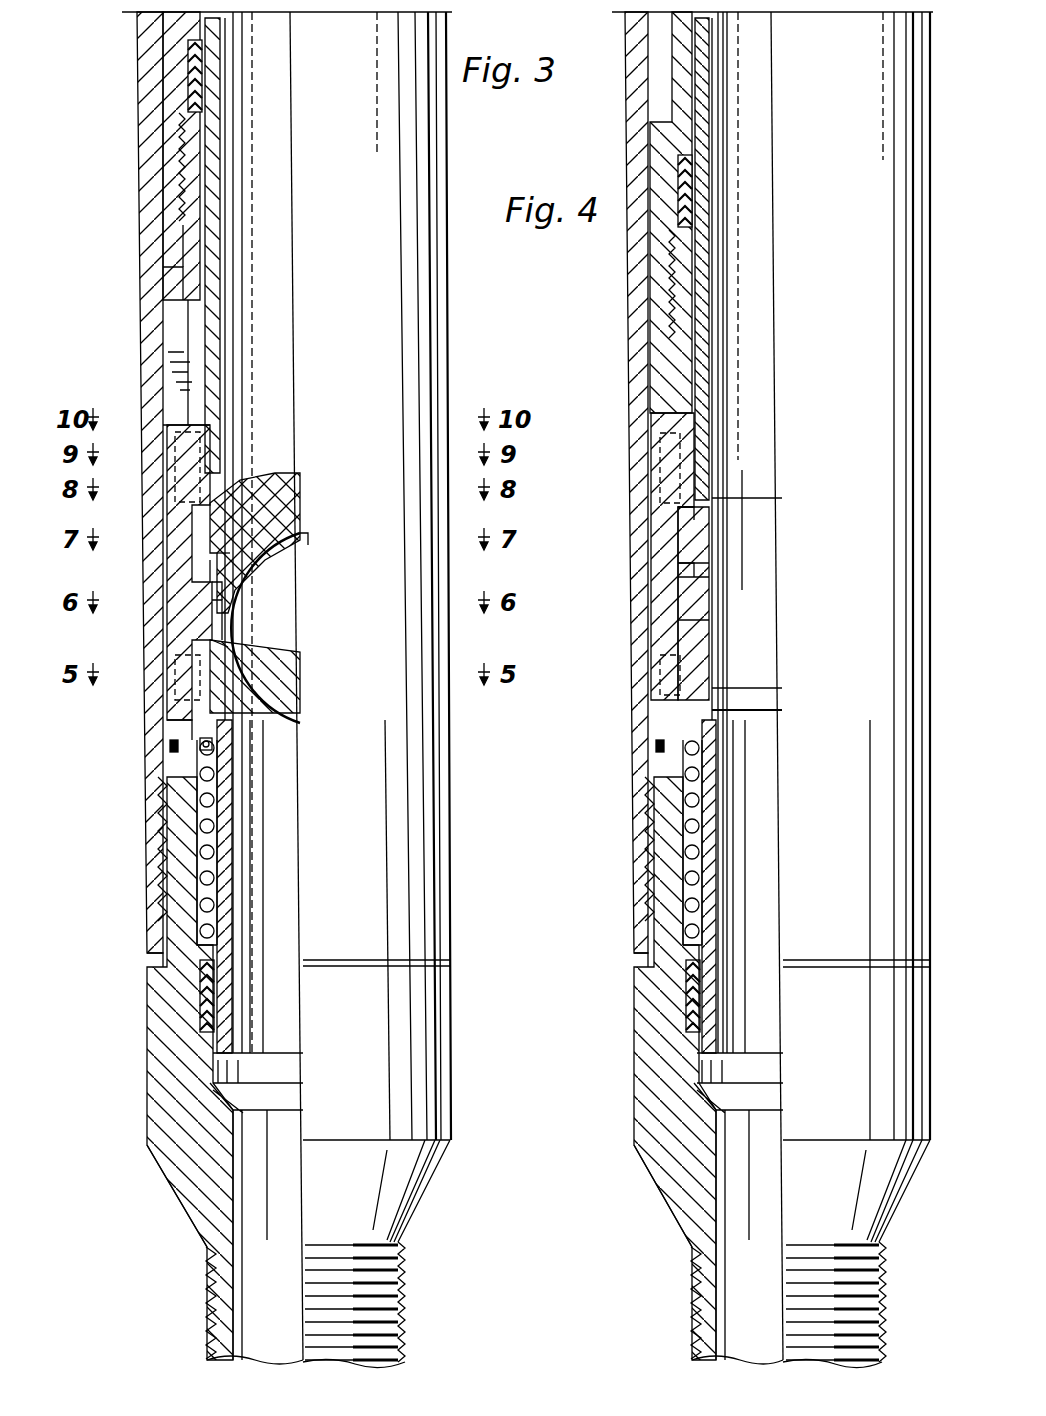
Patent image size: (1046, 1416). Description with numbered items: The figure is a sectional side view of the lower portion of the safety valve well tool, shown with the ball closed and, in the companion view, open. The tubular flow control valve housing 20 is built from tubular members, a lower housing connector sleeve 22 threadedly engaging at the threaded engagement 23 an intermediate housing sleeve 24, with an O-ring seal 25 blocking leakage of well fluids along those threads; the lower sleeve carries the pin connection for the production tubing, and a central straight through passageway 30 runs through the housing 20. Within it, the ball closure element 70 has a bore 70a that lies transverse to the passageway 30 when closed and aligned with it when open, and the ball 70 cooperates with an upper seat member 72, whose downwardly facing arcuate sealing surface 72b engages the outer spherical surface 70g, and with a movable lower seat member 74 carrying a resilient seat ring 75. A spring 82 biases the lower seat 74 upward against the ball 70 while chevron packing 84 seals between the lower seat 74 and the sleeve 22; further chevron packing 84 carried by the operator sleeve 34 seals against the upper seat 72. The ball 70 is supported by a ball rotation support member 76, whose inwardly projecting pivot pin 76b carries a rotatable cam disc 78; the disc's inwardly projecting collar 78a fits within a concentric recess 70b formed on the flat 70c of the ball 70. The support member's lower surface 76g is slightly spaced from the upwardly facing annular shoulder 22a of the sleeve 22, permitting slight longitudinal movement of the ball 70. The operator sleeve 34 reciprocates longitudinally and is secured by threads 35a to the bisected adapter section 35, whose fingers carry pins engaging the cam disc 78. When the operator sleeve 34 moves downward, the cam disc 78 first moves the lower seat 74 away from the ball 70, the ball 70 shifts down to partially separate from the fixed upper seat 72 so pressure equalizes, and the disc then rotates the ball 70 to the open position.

In FIG. 3, the tubular flow control valve housing 20 is at (156, 1027).
In FIG. 4, the tubular flow control valve housing 20 is at (626, 1090).
In FIG. 3, the lower housing connector sleeve 22 is at (199, 1191).
In FIG. 4, the lower housing connector sleeve 22 is at (672, 1170).
In FIG. 3, the upwardly facing annular shoulder 22a is at (176, 723).
In FIG. 3, the threaded engagement 23 is at (161, 863).
In FIG. 4, the threaded engagement 23 is at (651, 881).
In FIG. 3, the intermediate housing sleeve 24 is at (161, 767).
In FIG. 4, the intermediate housing sleeve 24 is at (641, 722).
In FIG. 3, the O-ring seal 25 is at (173, 751).
In FIG. 4, the O-ring seal 25 is at (652, 744).
In FIG. 3, the central straight through passageway 30 is at (284, 1284).
In FIG. 4, the central straight through passageway 30 is at (756, 1226).
In FIG. 3, the operator sleeve 34 is at (176, 75).
In FIG. 4, the operator sleeve 34 is at (652, 130).
In FIG. 3, the adapter section 35 is at (206, 238).
In FIG. 3, the threads 35a is at (186, 171).
In FIG. 3, the ball closure element 70 is at (273, 471).
In FIG. 4, the ball closure element 70 is at (706, 533).
In FIG. 3, the bore of the ball 70a is at (298, 536).
In FIG. 4, the bore of the ball 70a is at (712, 557).
In FIG. 3, the concentric recess 70b is at (241, 577).
In FIG. 4, the concentric recess 70b is at (696, 575).
In FIG. 3, the flat of the ball 70c is at (229, 649).
In FIG. 4, the flat of the ball 70c is at (681, 520).
In FIG. 3, the outer spherical surface of the ball 70g is at (292, 739).
In FIG. 3, the upper seat member 72 is at (216, 268).
In FIG. 4, the upper seat member 72 is at (706, 302).
In FIG. 3, the downwardly facing arcuate sealing surface 72b is at (291, 493).
In FIG. 3, the lower seat member 74 is at (226, 799).
In FIG. 4, the lower seat member 74 is at (716, 806).
In FIG. 4, the resilient seat ring 75 is at (716, 690).
In FIG. 3, the ball rotation support member 76 is at (181, 613).
In FIG. 4, the ball rotation support member 76 is at (672, 556).
In FIG. 3, the pivot pin 76b is at (233, 593).
In FIG. 3, the surface of the support member 76g is at (201, 743).
In FIG. 3, the cam disc 78 is at (289, 507).
In FIG. 3, the inwardly projecting collar 78a is at (233, 629).
In FIG. 3, the spring 82 is at (206, 873).
In FIG. 4, the spring 82 is at (691, 857).
In FIG. 3, the chevron packing 84 is at (191, 96).
In FIG. 4, the chevron packing 84 is at (692, 196).